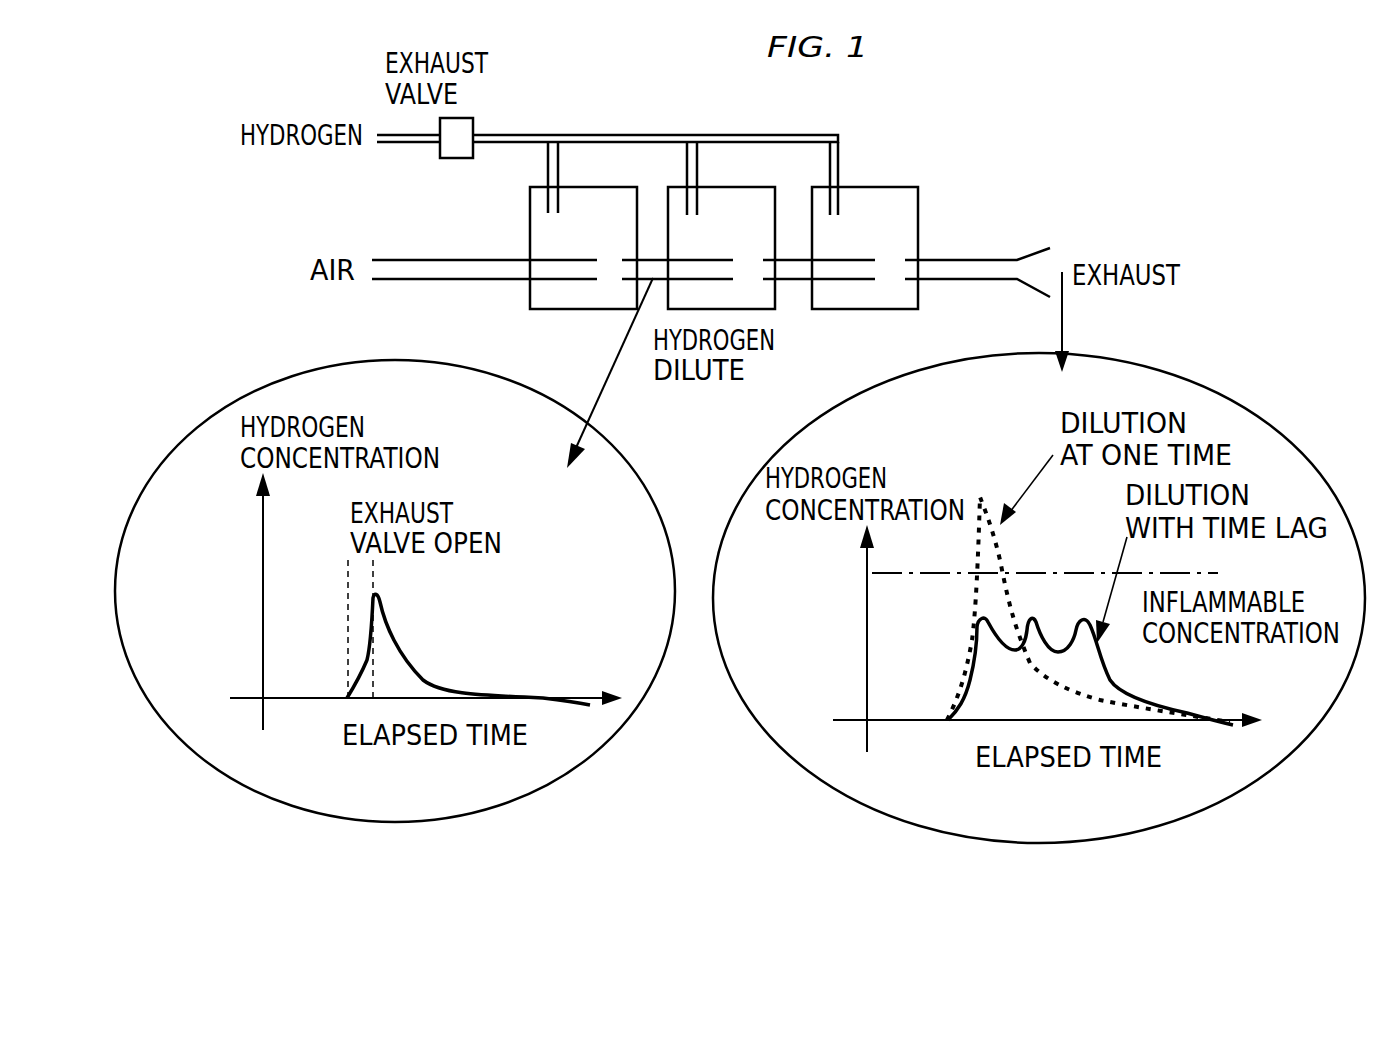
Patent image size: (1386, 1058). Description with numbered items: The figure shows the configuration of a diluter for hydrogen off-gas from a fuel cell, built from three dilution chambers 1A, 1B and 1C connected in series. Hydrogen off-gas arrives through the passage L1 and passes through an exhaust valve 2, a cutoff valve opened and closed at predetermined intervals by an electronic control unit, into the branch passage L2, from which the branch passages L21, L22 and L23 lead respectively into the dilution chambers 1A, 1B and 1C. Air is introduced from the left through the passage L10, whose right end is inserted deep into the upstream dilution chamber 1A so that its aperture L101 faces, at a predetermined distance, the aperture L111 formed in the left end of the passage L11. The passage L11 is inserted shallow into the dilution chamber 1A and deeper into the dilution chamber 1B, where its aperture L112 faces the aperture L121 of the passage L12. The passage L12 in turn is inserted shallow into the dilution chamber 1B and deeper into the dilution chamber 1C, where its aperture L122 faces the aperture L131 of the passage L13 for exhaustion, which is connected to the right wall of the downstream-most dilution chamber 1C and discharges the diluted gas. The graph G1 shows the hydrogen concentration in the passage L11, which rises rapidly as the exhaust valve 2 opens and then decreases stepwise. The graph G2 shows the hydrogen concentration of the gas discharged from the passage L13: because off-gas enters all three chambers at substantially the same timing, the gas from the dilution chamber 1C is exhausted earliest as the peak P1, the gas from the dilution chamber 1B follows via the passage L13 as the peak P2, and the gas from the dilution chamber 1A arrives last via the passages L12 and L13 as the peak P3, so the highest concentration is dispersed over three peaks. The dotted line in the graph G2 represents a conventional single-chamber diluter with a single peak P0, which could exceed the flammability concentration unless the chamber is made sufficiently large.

The passage L1 is at (395, 134).
The exhaust valve 2 is at (474, 122).
The branch passage L2 is at (614, 135).
The passage for introducing the air L10 is at (396, 259).
The branch passage L21 is at (548, 170).
The branch passage L22 is at (687, 172).
The branch passage L23 is at (839, 170).
The dilution chamber 1A is at (550, 309).
The dilution chamber 1B is at (712, 187).
The dilution chamber 1C is at (919, 188).
The aperture L101 is at (597, 268).
The aperture L111 is at (613, 272).
The passage L11 is at (650, 288).
The aperture L112 is at (735, 270).
The passage L12 is at (777, 281).
The aperture L121 is at (763, 281).
The aperture L122 is at (877, 282).
The passage for exhaustion L13 is at (993, 262).
The aperture L131 is at (906, 267).
The graph G1 is at (284, 378).
The graph G2 is at (1210, 392).
The peak P0 is at (983, 497).
The peak P1 is at (978, 618).
The peak P2 is at (1030, 617).
The peak P3 is at (1083, 617).